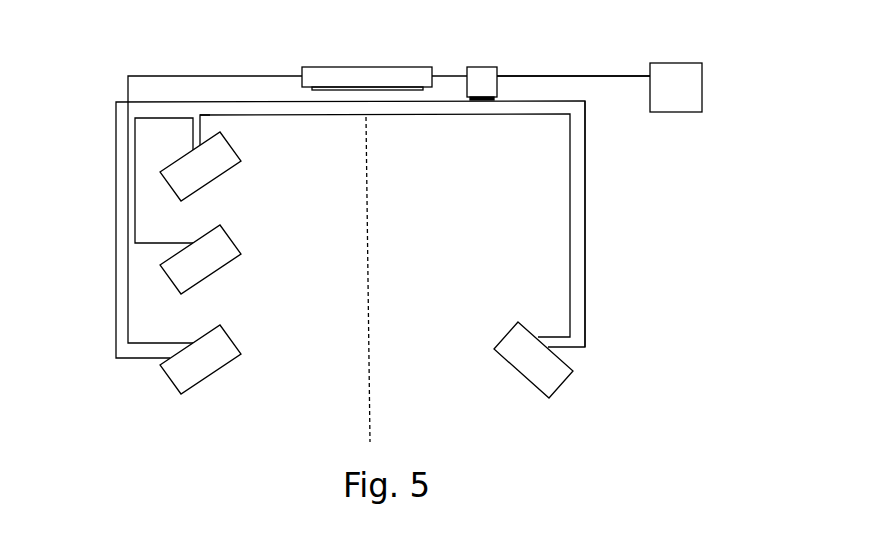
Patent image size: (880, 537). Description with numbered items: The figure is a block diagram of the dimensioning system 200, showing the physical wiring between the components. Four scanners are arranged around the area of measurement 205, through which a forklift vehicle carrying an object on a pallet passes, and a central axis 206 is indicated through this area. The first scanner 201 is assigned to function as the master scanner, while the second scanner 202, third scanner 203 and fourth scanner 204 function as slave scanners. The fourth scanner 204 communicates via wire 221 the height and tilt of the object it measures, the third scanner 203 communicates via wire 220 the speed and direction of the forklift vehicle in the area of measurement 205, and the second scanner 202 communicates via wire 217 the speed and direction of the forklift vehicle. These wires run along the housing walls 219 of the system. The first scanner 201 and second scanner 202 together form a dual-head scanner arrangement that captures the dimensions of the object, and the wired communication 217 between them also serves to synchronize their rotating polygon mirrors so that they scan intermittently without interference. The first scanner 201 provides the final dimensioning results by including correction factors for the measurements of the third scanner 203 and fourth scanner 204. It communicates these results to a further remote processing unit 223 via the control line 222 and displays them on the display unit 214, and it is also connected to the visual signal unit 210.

The beam delivery system 200 is at (166, 61).
The first scanner 201 is at (203, 372).
The second scanner 202 is at (558, 383).
The third scanner 203 is at (200, 180).
The fourth scanner 204 is at (203, 275).
The area of measurement 205 is at (407, 362).
The central axis 206 is at (366, 187).
The visual signal unit 210 is at (490, 67).
The display unit 214 is at (379, 67).
The wire 217 is at (586, 225).
The outer housing wall 219 is at (128, 170).
The wire 220 is at (570, 205).
The wire 221 is at (136, 187).
The control line 222 is at (580, 75).
The remote processing unit 223 is at (702, 78).